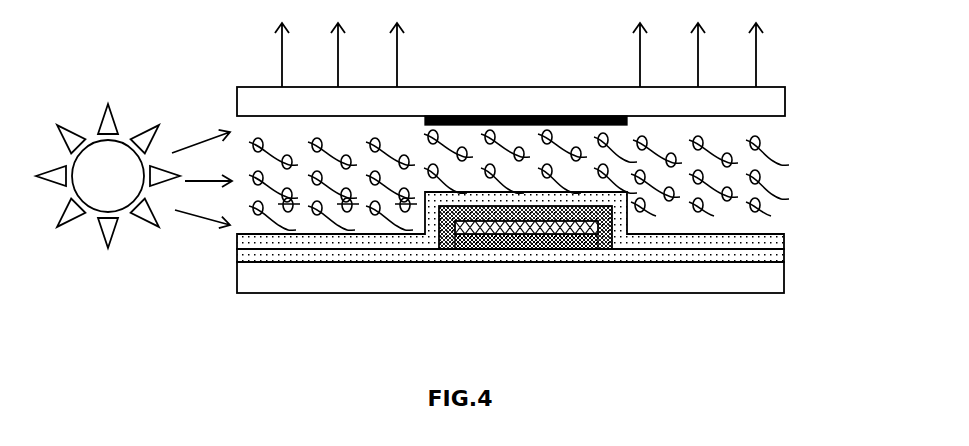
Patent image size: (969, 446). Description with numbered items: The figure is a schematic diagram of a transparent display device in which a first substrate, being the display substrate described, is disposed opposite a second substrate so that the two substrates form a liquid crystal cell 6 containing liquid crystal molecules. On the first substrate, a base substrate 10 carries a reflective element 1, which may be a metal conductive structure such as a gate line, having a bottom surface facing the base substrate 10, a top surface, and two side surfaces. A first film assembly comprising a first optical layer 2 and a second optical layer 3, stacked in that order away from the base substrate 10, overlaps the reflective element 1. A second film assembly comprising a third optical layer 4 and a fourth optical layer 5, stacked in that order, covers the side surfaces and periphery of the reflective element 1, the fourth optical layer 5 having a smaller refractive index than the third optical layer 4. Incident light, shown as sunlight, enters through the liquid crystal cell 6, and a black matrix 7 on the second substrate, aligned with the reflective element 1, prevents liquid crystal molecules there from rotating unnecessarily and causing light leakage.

The reflective element 1 is at (483, 230).
The first optical layer 2 is at (767, 260).
The second optical layer 3 is at (540, 238).
The third optical layer 4 is at (447, 233).
The fourth optical layer 5 is at (767, 243).
The liquid crystal cell 6 is at (783, 182).
The black matrix 7 is at (548, 118).
The base substrate 10 is at (767, 287).